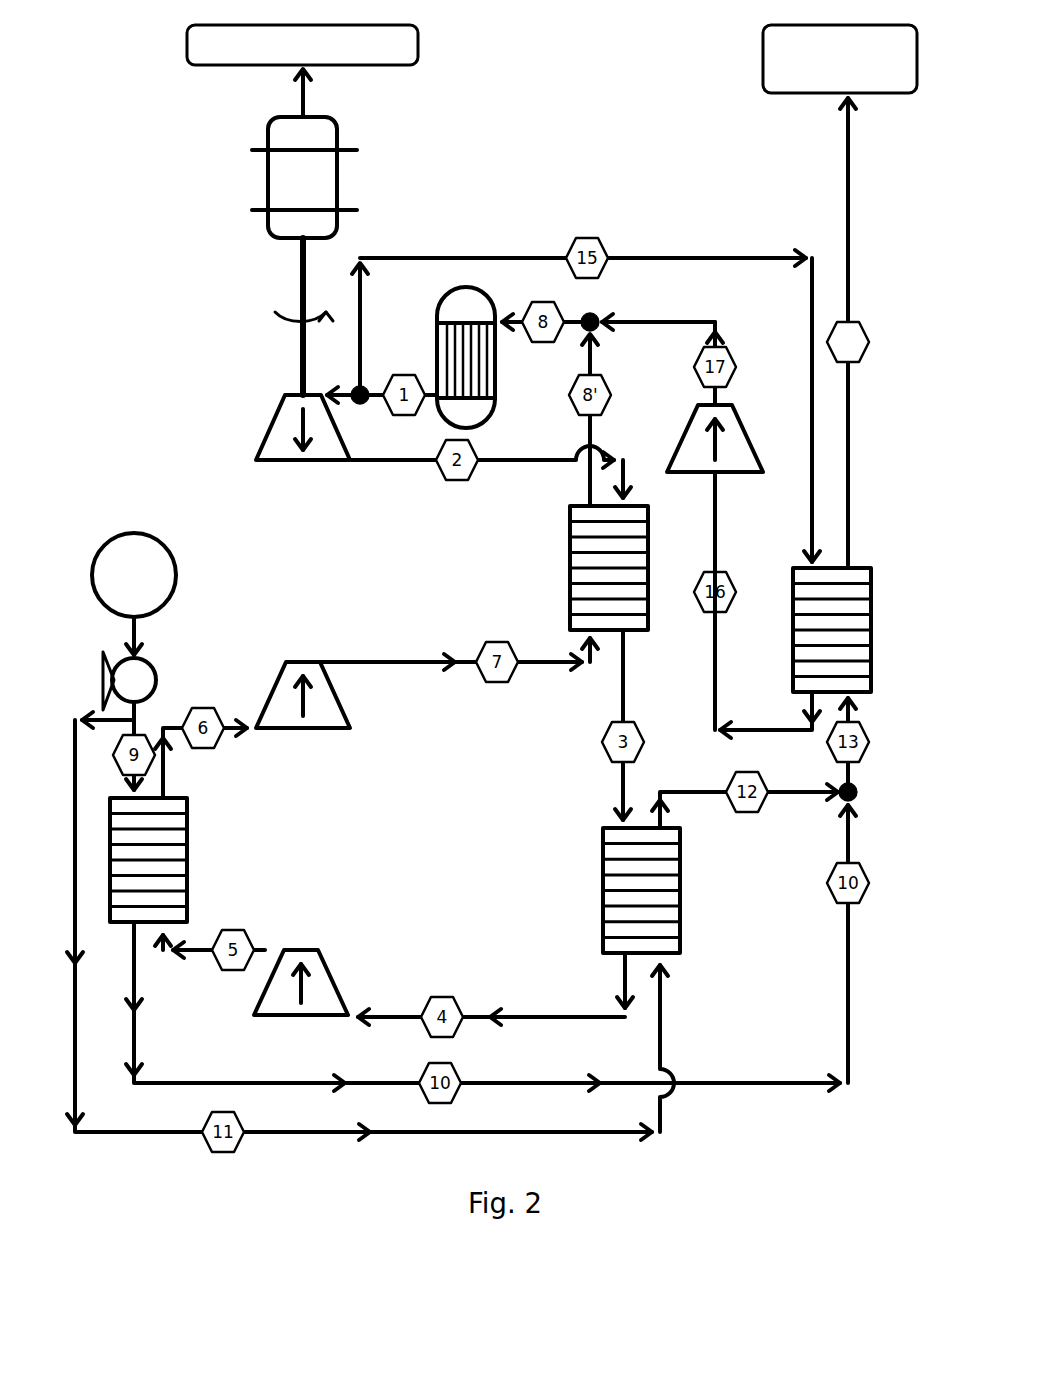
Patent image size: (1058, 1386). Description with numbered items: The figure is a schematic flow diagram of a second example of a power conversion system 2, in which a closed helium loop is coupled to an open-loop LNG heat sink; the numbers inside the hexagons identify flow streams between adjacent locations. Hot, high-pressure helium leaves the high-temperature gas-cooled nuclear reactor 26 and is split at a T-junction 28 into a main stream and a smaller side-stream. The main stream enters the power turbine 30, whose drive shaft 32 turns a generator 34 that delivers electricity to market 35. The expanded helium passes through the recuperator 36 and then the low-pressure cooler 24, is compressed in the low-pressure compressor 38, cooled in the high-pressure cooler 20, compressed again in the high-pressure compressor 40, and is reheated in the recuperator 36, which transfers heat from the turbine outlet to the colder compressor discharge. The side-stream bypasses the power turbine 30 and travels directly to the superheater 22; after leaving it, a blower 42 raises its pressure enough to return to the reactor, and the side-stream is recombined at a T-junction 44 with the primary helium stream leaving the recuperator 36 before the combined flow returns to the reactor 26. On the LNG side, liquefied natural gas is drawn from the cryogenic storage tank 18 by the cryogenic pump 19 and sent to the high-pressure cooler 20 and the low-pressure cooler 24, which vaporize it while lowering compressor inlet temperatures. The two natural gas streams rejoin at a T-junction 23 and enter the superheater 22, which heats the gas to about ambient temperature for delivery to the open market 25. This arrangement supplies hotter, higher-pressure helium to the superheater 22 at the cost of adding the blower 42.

The electricity to market 35 is at (317, 71).
The generator 34 is at (262, 184).
The drive shaft 32 is at (297, 292).
The power turbine 30 is at (260, 430).
The T-junction 28 is at (368, 382).
The high-temperature gas-cooled nuclear reactor 26 is at (488, 278).
The T-junction 44 is at (598, 316).
The blower 42 is at (752, 430).
The open market 25 is at (850, 296).
The superheater 22 is at (877, 638).
The T-junction 23 is at (860, 801).
The cryogenic storage tank 18 is at (98, 541).
The cryogenic pump 19 is at (100, 676).
The high-pressure cooler 20 is at (190, 862).
The high-pressure compressor 40 is at (272, 678).
The recuperator 36 is at (563, 566).
The low-pressure cooler 24 is at (687, 894).
The low-pressure compressor 38 is at (340, 977).
The power conversion system 2 is at (578, 104).